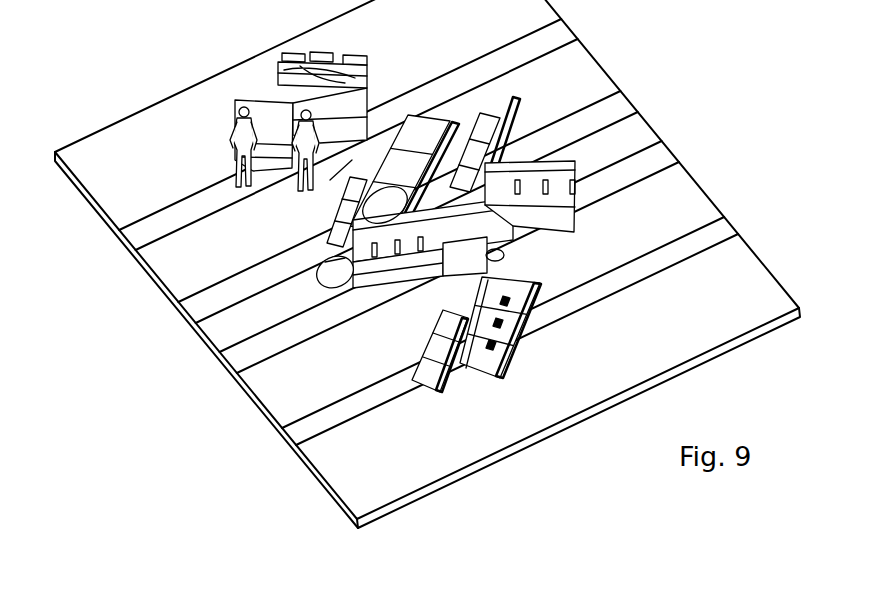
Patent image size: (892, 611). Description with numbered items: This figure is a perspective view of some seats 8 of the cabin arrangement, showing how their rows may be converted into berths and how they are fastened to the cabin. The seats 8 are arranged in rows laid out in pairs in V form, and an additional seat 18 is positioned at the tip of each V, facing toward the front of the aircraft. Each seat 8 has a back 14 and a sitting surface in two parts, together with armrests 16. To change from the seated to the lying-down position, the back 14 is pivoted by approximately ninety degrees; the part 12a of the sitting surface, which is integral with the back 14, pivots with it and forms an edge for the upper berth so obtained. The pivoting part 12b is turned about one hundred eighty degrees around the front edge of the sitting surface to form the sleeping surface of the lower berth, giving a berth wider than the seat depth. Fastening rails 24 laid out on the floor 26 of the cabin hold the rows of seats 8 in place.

The seat 8 is at (405, 287).
The part of sitting surface integral with back 12a is at (372, 97).
The pivoting part of sitting surface 12b is at (468, 365).
The back 14 is at (348, 90).
The armrest 16 is at (573, 165).
The additional seat 18 is at (325, 284).
The fastening rail 24 is at (163, 233).
The floor 26 is at (418, 455).